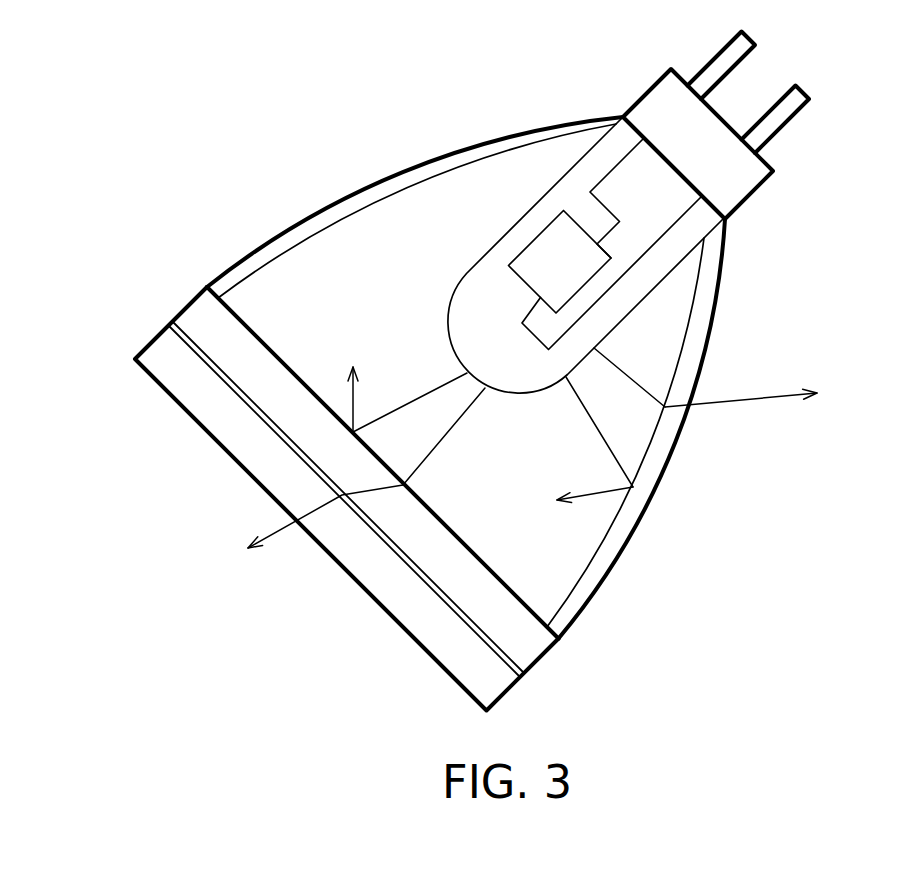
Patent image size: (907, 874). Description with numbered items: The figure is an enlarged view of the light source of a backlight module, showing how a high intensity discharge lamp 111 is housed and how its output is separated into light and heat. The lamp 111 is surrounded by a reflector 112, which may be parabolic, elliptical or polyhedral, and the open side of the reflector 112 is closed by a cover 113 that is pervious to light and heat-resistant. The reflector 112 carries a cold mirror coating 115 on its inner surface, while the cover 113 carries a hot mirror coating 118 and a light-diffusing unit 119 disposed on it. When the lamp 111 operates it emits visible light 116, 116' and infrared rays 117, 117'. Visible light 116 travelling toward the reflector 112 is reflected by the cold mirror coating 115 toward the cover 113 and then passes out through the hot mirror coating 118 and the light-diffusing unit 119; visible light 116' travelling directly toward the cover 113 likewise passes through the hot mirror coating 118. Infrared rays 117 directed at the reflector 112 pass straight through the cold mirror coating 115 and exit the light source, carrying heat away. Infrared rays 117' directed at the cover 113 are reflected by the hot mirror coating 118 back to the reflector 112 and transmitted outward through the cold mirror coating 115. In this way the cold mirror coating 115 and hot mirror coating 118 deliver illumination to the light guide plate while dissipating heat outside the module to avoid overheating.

The high intensity discharge lamp 111 is at (605, 213).
The reflector 112 is at (555, 378).
The cover 113 is at (318, 439).
The cold mirror coating 115 is at (508, 375).
The visible light 116 is at (580, 440).
The visible light 116' is at (366, 483).
The infrared rays 117 is at (705, 377).
The infrared rays 117' is at (407, 380).
The hot mirror coating 118 is at (265, 340).
The light-diffusing unit 119 is at (309, 470).